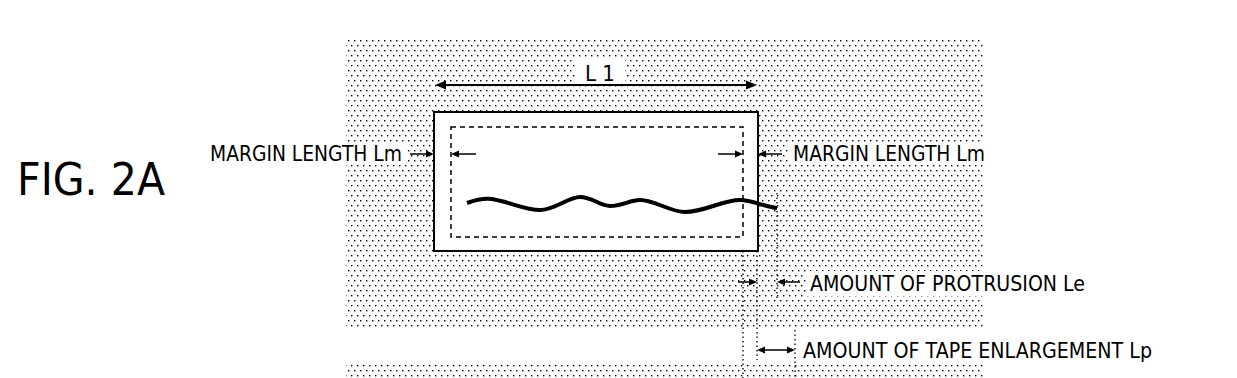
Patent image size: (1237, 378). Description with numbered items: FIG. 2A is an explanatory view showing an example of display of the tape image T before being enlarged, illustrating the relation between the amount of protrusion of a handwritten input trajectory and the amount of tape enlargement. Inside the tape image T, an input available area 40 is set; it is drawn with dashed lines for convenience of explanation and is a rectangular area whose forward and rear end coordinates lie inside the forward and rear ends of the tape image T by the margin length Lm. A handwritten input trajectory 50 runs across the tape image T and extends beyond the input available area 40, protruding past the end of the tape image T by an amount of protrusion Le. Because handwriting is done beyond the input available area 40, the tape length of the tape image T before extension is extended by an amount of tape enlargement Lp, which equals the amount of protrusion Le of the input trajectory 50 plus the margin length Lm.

The tape image T is at (434, 222).
The input available area 40 is at (607, 237).
The input trajectory 50 is at (537, 233).